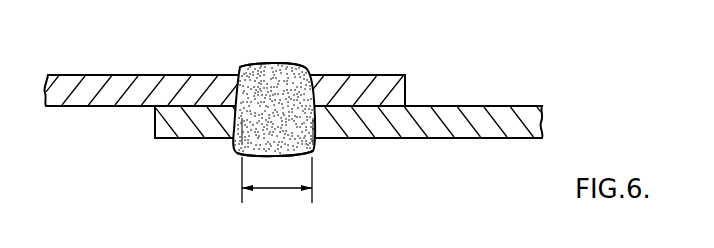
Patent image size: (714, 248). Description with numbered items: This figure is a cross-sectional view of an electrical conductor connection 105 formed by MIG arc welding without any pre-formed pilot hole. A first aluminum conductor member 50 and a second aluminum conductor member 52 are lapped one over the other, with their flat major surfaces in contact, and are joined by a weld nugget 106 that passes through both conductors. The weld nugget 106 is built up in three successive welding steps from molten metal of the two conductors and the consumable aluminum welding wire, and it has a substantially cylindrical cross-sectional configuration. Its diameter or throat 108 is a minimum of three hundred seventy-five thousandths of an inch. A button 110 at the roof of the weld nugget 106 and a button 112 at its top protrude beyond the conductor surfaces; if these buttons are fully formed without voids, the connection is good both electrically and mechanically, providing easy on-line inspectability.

The first aluminum conductor member 50 is at (457, 118).
The second aluminum conductor member 52 is at (116, 76).
The electrical conductor connection 105 is at (217, 61).
The weld nugget 106 is at (311, 76).
The diameter or throat of the weld nugget 108 is at (278, 190).
The weld button at the roof of the weld nugget 110 is at (272, 157).
The weld button at the top of the weld nugget 112 is at (279, 65).